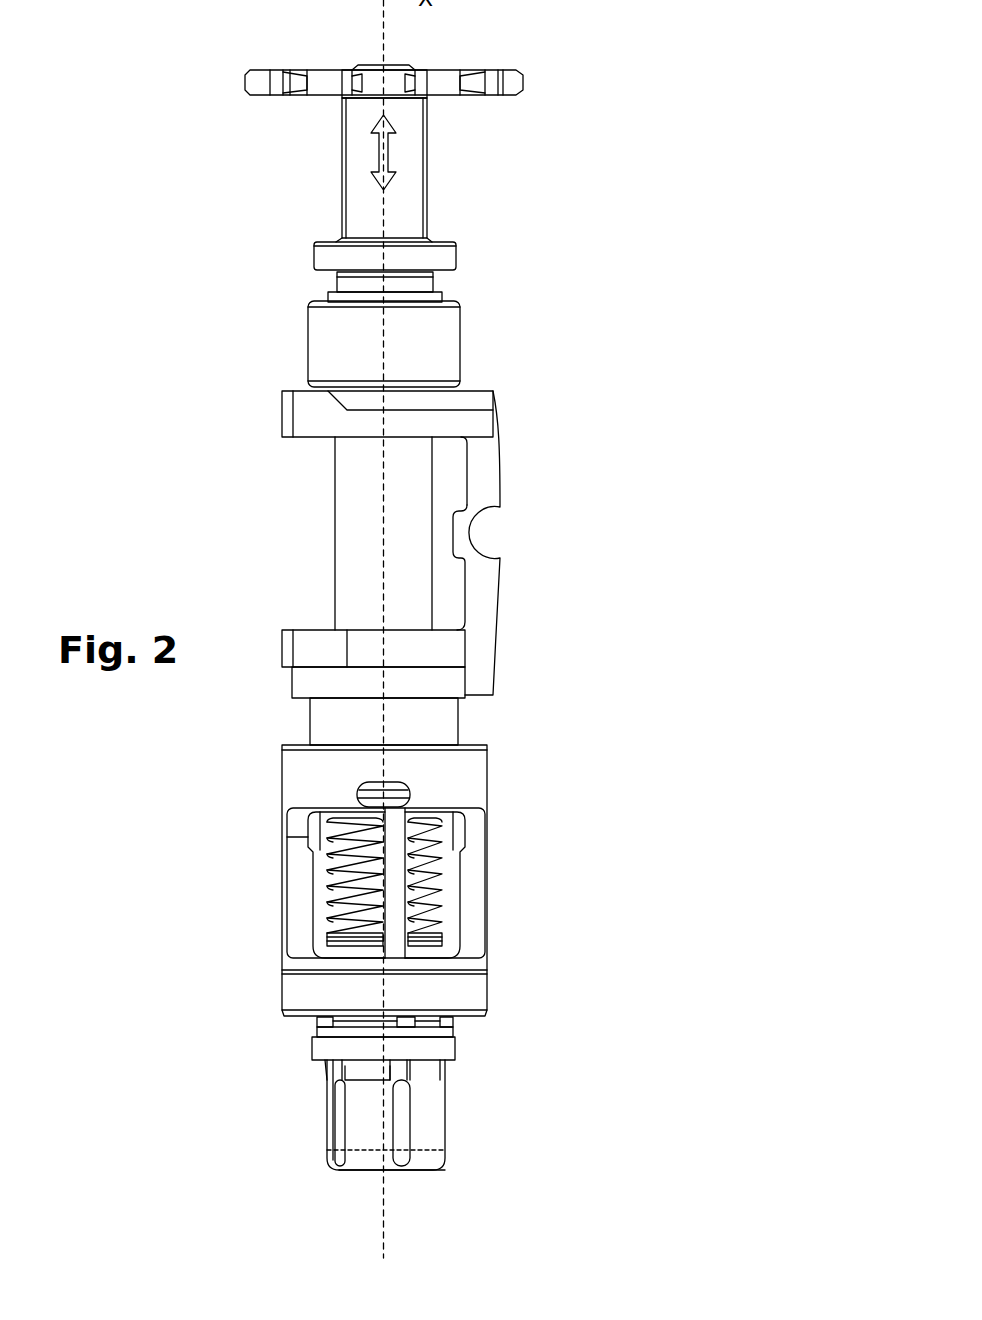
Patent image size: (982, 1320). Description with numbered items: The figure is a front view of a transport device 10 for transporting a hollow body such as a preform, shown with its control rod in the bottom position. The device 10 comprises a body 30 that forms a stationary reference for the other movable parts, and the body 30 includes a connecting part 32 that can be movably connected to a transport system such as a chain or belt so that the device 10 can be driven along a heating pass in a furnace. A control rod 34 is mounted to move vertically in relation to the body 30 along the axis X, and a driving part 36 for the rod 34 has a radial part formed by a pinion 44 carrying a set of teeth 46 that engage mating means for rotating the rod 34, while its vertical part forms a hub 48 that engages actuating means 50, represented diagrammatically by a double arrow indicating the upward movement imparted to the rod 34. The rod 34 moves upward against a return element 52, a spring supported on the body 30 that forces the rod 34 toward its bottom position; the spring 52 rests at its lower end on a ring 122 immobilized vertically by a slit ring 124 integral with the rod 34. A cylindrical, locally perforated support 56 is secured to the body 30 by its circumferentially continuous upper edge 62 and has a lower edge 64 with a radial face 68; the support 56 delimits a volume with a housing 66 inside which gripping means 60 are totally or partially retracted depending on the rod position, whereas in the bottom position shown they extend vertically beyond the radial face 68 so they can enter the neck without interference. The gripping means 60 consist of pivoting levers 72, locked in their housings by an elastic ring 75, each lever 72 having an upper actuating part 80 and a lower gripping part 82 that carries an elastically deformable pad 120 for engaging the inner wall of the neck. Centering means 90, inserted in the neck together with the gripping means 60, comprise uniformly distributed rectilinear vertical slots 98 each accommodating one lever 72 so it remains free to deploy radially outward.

The transport device 10 is at (627, 350).
The body 30 is at (357, 558).
The connecting part 32 is at (483, 575).
The control rod 34 is at (372, 508).
The driving part 36 is at (455, 182).
The pinion 44 is at (330, 83).
The set of teeth 46 is at (510, 82).
The hub 48 is at (358, 185).
The actuating means 50 is at (375, 155).
The return element 52 is at (430, 893).
The support 56 is at (295, 886).
The gripping means 60 is at (476, 1149).
The upper edge 62 is at (302, 765).
The lower edge 64 is at (470, 992).
The housing 66 is at (443, 838).
The radial face 68 is at (466, 1019).
The levers 72 is at (405, 1073).
The elastic ring 75 is at (320, 1046).
The upper actuating part 80 is at (318, 1027).
The lower gripping part 82 is at (347, 1172).
The centering means 90 is at (362, 1121).
The vertical slots 98 is at (403, 1132).
The pads 120 is at (335, 1135).
The ring 122 is at (350, 914).
The slit ring 124 is at (420, 946).